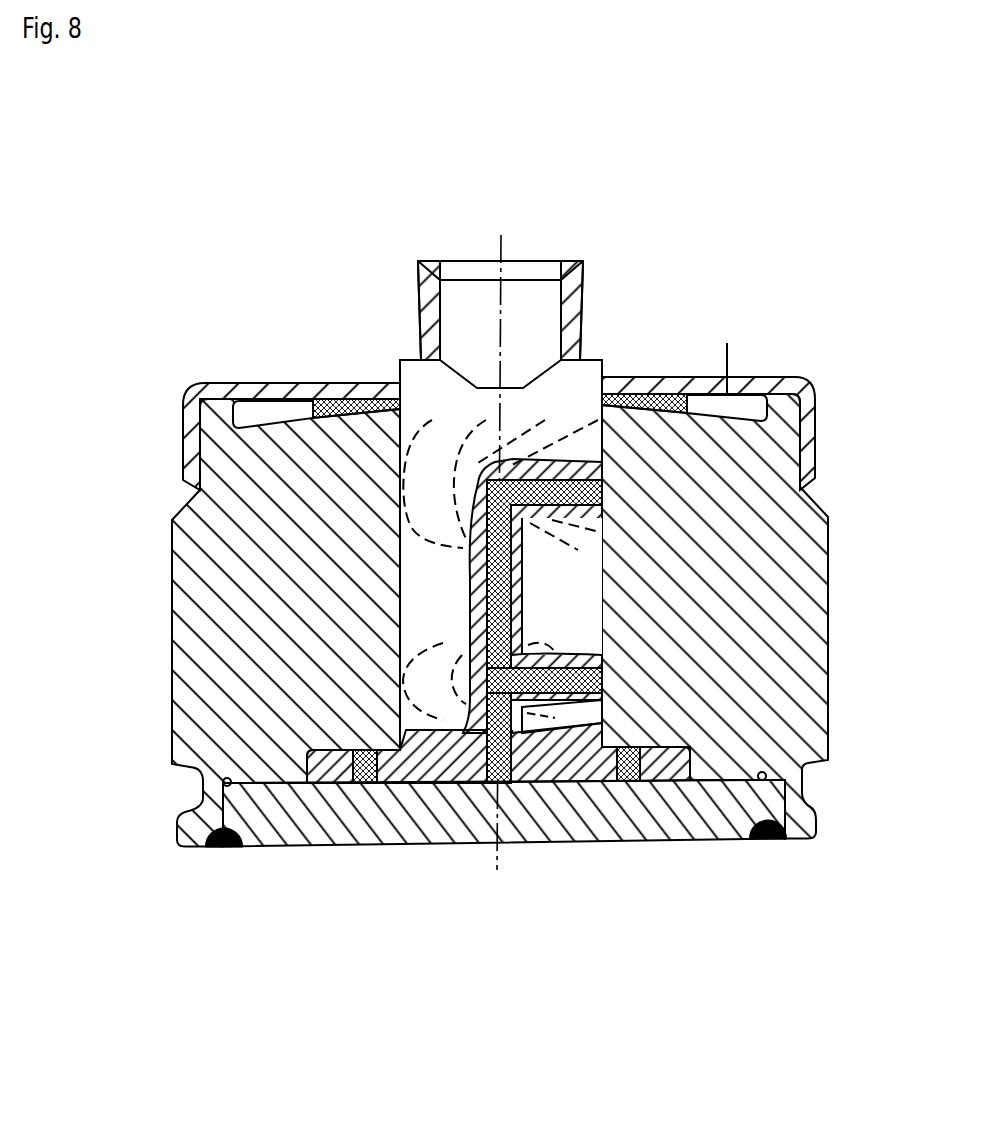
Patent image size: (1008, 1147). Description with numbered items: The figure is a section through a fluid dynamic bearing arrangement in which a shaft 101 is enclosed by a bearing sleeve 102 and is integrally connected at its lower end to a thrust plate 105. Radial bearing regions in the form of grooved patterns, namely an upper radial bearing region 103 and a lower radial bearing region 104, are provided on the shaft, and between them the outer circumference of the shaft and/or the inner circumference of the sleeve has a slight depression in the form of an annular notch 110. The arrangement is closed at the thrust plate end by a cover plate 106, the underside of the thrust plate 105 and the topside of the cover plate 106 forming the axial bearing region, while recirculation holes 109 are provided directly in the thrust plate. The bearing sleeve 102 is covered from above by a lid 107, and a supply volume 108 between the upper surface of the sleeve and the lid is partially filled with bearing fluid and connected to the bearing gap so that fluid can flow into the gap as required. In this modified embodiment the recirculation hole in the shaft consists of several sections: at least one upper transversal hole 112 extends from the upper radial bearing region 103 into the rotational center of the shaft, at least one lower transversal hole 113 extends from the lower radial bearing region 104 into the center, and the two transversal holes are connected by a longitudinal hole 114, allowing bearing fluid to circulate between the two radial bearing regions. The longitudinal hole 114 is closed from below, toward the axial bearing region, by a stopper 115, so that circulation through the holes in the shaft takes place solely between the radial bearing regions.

The shaft 101 is at (585, 385).
The bearing sleeve 102 is at (755, 593).
The upper radial bearing region 103 is at (523, 530).
The lower radial bearing region 104 is at (523, 722).
The thrust plate 105 is at (667, 763).
The cover plate 106 is at (407, 827).
The lid 107 is at (819, 392).
The supply volume 108 is at (694, 400).
The recirculation holes 109 is at (367, 787).
The annular notch 110 is at (395, 596).
The upper transversal hole 112 is at (603, 480).
The lower transversal hole 113 is at (603, 668).
The longitudinal hole 114 is at (533, 760).
The stopper 115 is at (490, 782).